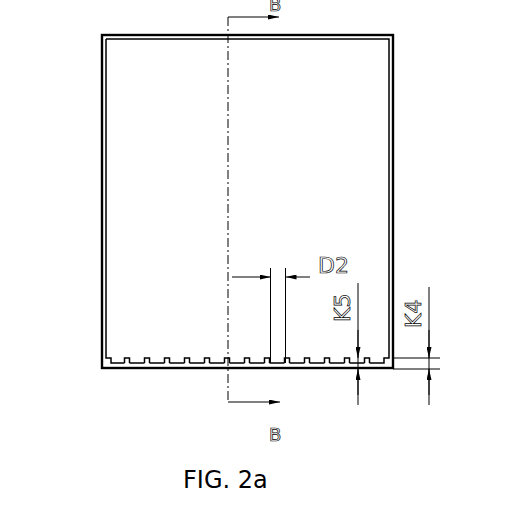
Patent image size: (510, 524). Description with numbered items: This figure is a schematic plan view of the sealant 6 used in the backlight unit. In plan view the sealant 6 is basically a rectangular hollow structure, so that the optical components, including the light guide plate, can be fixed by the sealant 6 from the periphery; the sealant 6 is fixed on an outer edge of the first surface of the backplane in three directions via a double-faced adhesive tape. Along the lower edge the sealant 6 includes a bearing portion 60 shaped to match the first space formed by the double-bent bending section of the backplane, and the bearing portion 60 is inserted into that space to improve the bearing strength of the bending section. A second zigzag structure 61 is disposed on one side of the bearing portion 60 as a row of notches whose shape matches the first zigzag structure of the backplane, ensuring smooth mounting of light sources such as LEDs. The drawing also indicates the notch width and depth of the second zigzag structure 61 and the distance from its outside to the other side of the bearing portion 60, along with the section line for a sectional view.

The sealant 6 is at (213, 228).
The bearing portion 60 is at (160, 370).
The second zigzag structure 61 is at (127, 358).